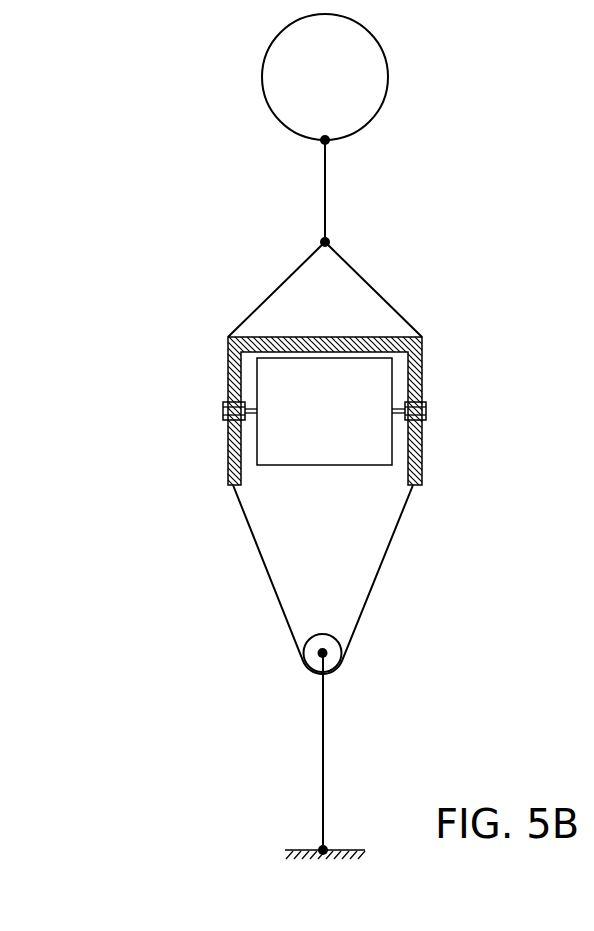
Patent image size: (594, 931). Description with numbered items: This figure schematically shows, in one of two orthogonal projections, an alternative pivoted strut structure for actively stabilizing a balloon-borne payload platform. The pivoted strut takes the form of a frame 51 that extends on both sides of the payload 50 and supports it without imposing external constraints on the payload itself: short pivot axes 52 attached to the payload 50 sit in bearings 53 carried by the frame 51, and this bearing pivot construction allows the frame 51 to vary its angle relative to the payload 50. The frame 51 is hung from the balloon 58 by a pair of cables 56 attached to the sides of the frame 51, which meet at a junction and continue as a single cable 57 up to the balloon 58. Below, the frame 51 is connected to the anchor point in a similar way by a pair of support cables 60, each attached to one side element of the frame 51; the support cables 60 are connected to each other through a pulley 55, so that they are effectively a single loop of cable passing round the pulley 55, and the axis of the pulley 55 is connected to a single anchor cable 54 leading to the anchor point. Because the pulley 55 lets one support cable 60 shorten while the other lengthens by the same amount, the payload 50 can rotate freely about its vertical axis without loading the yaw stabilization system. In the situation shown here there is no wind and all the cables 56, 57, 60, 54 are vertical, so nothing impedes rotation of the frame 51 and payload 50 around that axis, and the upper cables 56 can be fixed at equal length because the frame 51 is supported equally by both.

The payload 50 is at (309, 420).
The frame 51 is at (422, 352).
The pivot axes 52 is at (222, 405).
The bearings 53 is at (223, 418).
The anchor cable 54 is at (323, 762).
The pulley 55 is at (342, 650).
The pair of cables 56 is at (365, 275).
The single cable 57 is at (326, 165).
The balloon 58 is at (388, 70).
The support cables 60 is at (268, 583).